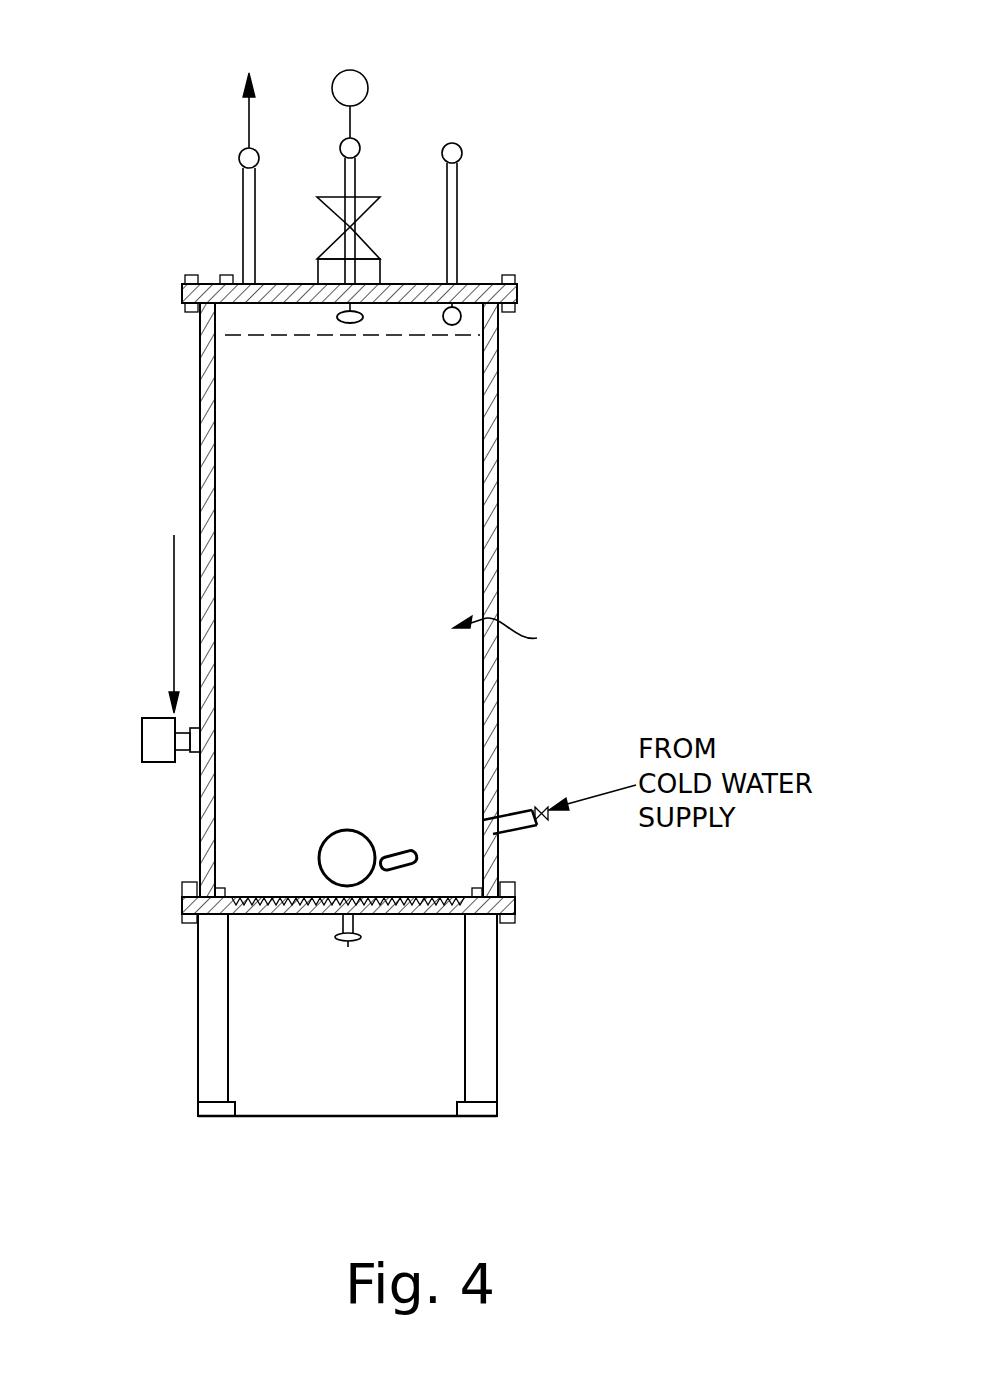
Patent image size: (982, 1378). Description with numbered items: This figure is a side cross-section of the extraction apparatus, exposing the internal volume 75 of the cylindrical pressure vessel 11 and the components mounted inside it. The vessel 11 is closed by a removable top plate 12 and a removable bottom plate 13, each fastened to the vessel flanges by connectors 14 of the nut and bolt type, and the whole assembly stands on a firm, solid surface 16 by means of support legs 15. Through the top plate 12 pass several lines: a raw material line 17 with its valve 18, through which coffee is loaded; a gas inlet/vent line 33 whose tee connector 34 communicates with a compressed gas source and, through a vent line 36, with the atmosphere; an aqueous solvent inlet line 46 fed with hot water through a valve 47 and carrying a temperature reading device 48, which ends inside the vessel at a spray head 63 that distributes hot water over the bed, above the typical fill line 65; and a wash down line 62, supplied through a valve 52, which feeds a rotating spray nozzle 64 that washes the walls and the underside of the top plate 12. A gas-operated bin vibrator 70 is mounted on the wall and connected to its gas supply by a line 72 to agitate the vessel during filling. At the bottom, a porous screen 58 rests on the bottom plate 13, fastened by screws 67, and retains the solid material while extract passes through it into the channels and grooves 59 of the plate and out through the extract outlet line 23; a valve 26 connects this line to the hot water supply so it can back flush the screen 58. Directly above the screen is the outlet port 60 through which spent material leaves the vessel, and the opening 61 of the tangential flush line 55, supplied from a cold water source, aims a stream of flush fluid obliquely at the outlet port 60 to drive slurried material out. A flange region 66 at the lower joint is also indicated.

The cylindrical pressure vessel 11 is at (498, 518).
The top plate 12 is at (517, 295).
The bottom plate 13 is at (515, 908).
The connectors 14 is at (510, 275).
The support legs 15 is at (228, 1010).
The firm, solid surface 16 is at (375, 1115).
The raw material line 17 is at (380, 274).
The valve 18 is at (368, 222).
The extract outlet line 23 is at (343, 928).
The valve 26 is at (350, 947).
The gas inlet/vent line 33 is at (243, 208).
The tee connector 34 is at (239, 158).
The vent line 36 is at (249, 112).
The aqueous solvent inlet line 46 is at (356, 162).
The valve 47 is at (360, 146).
The temperature reading device 48 is at (350, 70).
The valve 52 is at (462, 153).
The tangential flush line 55 is at (525, 812).
The porous screen 58 is at (275, 897).
The channels and grooves 59 is at (370, 914).
The outlet port 60 is at (350, 830).
The opening 61 is at (405, 850).
The wash down line 62 is at (457, 198).
The spray head 63 is at (352, 325).
The rotating spray nozzle 64 is at (453, 328).
The fill line 65 is at (256, 340).
The lower flange 66 is at (182, 901).
The screws 67 is at (222, 888).
The gas-operated bin vibrator 70 is at (142, 735).
The line 72 is at (174, 552).
The internal volume 75 is at (511, 633).